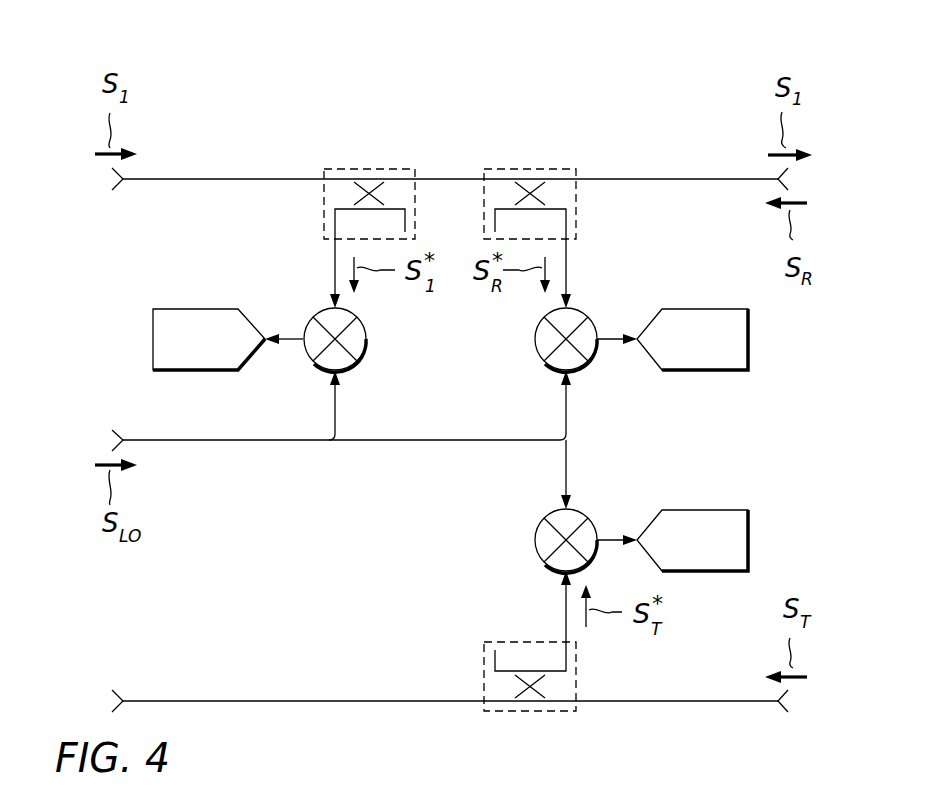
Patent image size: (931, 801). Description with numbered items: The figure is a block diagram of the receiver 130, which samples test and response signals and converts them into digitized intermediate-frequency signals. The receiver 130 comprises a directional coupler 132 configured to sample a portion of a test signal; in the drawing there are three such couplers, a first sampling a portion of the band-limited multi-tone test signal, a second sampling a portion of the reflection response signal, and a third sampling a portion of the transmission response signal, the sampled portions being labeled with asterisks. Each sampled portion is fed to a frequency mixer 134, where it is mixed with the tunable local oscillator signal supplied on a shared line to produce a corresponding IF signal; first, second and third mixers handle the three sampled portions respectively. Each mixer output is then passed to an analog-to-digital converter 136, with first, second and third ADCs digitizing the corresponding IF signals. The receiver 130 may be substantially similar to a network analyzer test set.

The receiver 130 is at (731, 53).
The directional coupler 132 is at (371, 150).
The frequency mixer 134 is at (549, 515).
The analog-to-digital converter (ADC) 136 is at (197, 309).